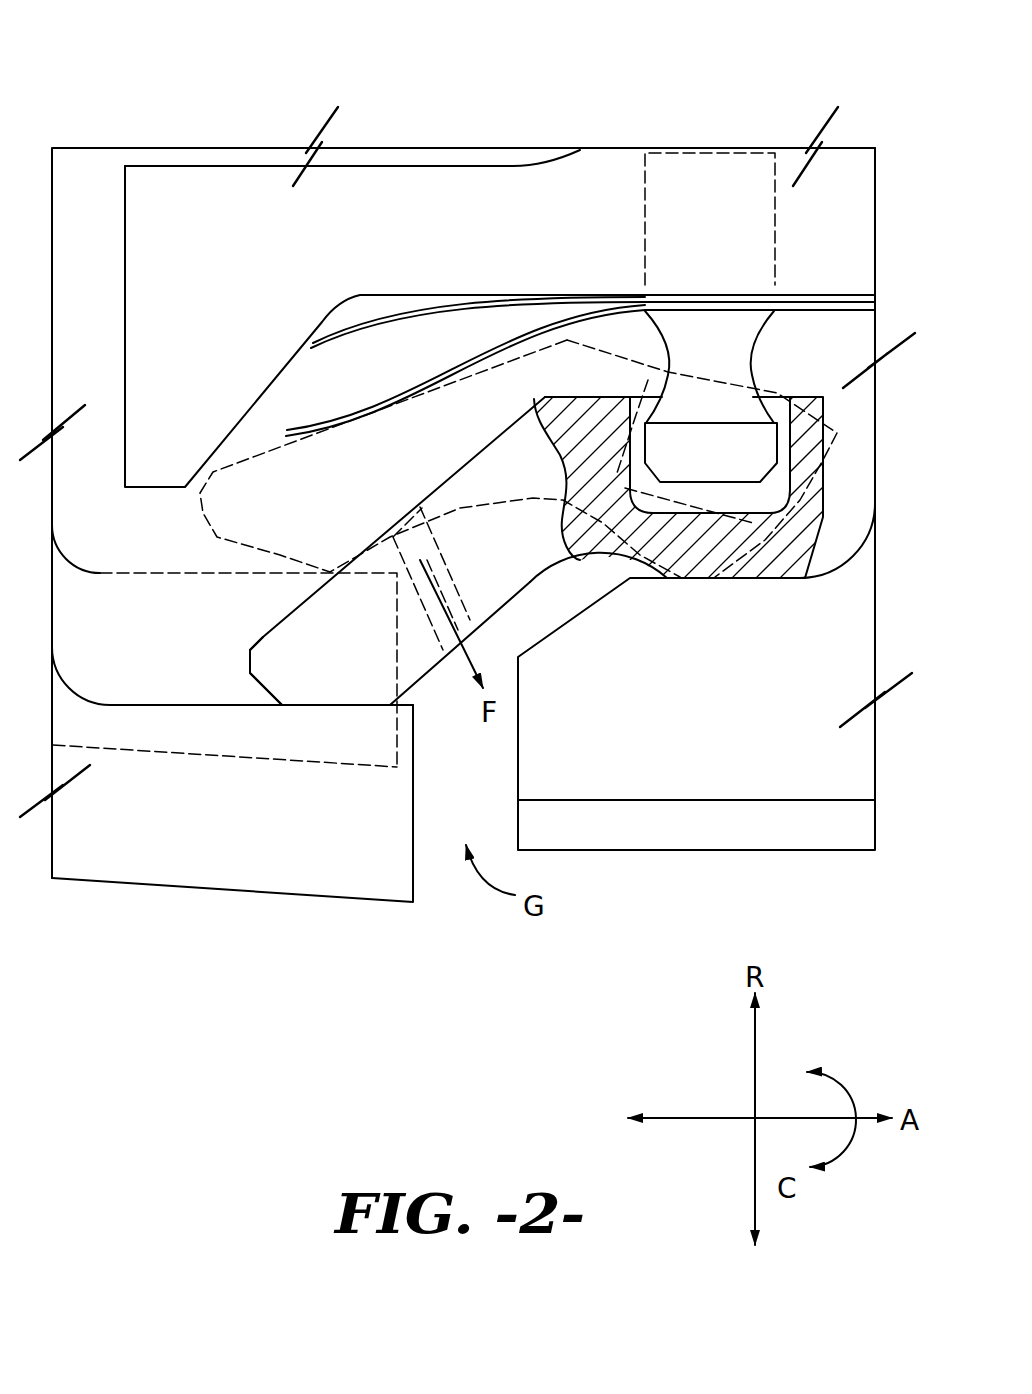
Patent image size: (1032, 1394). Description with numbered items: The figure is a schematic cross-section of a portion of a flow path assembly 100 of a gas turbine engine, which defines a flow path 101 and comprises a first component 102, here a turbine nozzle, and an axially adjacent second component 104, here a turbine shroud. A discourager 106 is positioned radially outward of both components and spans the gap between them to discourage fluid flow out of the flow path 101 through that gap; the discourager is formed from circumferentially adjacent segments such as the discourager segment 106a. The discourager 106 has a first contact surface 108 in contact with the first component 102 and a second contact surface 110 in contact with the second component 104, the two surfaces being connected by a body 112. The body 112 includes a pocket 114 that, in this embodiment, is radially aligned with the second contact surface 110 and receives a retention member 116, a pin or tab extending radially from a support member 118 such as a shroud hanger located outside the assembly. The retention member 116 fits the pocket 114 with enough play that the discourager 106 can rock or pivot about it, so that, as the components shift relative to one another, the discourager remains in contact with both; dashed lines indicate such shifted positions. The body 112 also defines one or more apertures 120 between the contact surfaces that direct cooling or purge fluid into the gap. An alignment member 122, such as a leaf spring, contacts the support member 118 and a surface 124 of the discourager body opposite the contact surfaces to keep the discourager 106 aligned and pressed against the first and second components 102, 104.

The flow path assembly 100 is at (200, 100).
The flow path 101 is at (805, 902).
The first component 102 is at (241, 865).
The second component 104 is at (855, 657).
The discourager 106 is at (277, 603).
The discourager segment 106a is at (268, 672).
The first contact surface 108 is at (332, 710).
The second contact surface 110 is at (718, 582).
The body 112 is at (520, 570).
The pocket 114 is at (776, 395).
The retention member 116 is at (722, 325).
The support member 118 is at (428, 198).
The aperture 120 is at (478, 595).
The alignment member 122 is at (490, 340).
The surface 124 is at (258, 640).